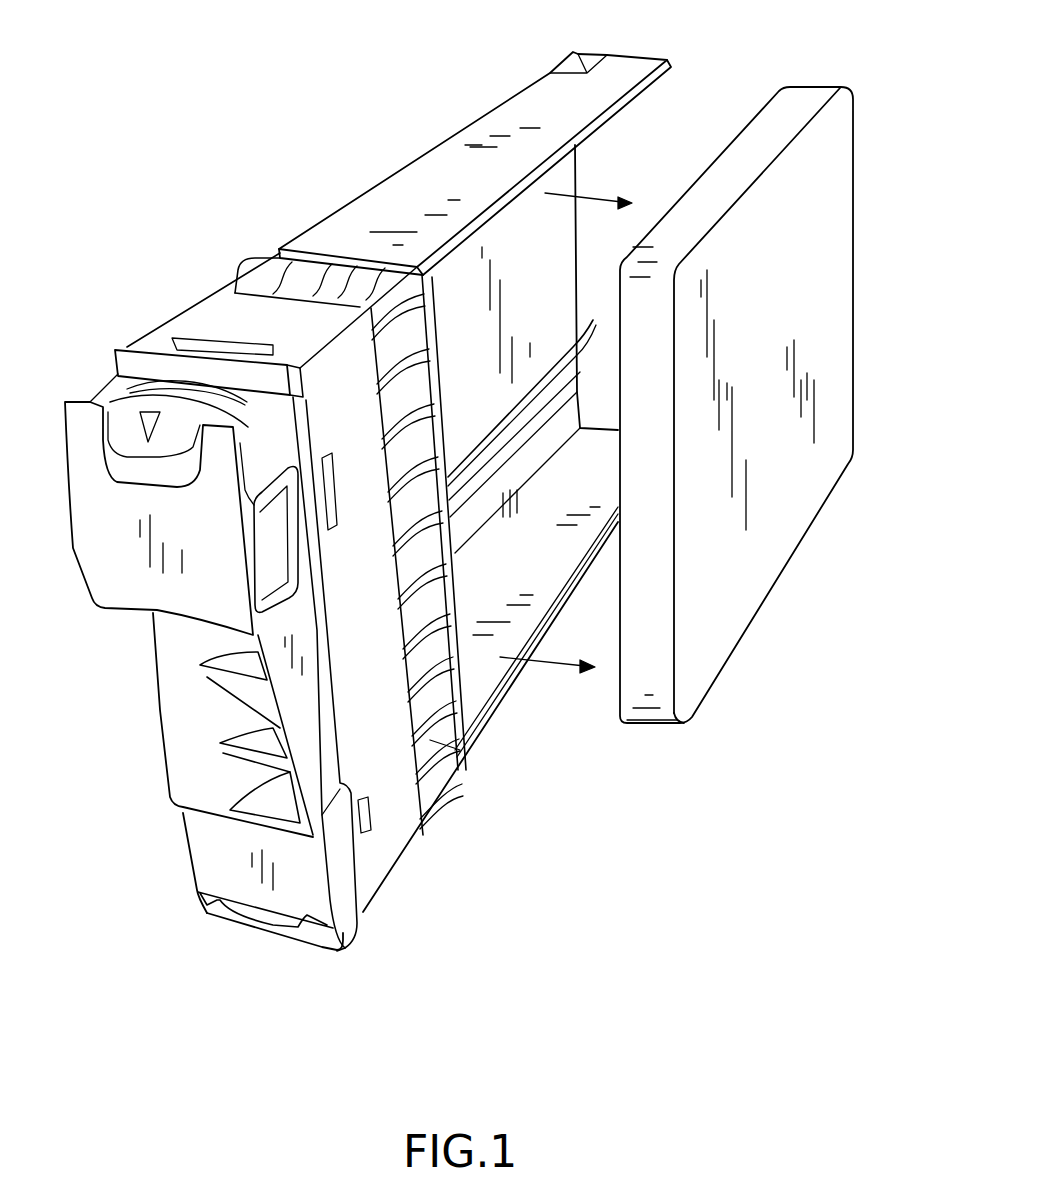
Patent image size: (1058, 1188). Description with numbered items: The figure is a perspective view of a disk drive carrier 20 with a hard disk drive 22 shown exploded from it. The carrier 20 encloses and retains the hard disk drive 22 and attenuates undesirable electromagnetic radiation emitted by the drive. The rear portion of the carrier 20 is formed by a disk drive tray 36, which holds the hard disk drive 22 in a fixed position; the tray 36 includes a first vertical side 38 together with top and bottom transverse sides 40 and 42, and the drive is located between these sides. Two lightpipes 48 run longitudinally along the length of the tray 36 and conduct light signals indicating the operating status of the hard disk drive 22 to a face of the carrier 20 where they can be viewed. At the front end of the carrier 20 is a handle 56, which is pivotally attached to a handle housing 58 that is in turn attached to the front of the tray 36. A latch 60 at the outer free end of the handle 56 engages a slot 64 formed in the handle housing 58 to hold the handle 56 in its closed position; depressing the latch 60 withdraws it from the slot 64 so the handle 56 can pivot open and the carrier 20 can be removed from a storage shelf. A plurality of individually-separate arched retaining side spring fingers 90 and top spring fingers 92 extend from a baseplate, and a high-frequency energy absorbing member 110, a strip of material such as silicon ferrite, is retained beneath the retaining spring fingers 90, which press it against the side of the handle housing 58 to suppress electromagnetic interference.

The disk drive carrier 20 is at (162, 148).
The hard disk drive 22 is at (853, 245).
The disk drive tray 36 is at (363, 182).
The first vertical side 38 is at (560, 180).
The top transverse side 40 is at (522, 97).
The bottom transverse side 42 is at (477, 690).
The lightpipes 48 is at (593, 330).
The handle 56 is at (72, 547).
The handle housing 58 is at (215, 302).
The latch 60 is at (183, 333).
The slot 64 is at (172, 343).
The retaining side spring fingers 90 is at (405, 327).
The top spring fingers 92 is at (272, 255).
The high-frequency energy absorbing member 110 is at (428, 738).